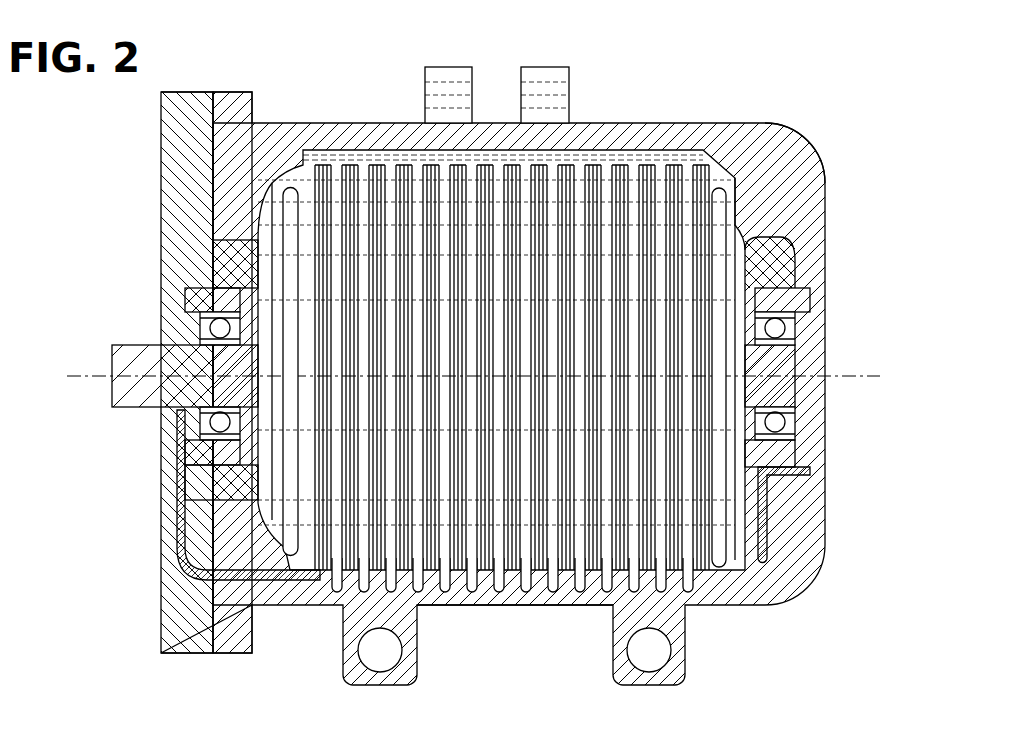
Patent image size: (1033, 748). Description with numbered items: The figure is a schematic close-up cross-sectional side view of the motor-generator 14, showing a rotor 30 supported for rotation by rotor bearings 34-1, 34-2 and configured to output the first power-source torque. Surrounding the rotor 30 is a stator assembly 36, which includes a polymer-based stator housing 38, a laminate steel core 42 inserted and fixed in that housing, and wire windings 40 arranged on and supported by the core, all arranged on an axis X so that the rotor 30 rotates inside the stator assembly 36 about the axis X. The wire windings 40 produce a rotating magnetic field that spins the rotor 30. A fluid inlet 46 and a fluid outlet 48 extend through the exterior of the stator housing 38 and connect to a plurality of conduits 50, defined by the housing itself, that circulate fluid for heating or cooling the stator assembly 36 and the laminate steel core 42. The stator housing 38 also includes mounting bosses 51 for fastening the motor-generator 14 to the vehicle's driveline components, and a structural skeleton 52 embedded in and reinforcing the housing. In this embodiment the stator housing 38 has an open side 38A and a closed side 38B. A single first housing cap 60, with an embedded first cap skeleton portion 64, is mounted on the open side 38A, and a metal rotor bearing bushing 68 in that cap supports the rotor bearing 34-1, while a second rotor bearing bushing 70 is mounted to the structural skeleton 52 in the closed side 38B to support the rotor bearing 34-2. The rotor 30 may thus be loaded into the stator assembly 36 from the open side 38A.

The motor-generator 14 is at (471, 351).
The rotor 30 is at (778, 360).
The rotor bearing 34-1 is at (215, 422).
The rotor bearing 34-2 is at (780, 424).
The stator assembly 36 is at (703, 607).
The stator housing 38 is at (558, 363).
The open side 38A is at (229, 240).
The closed side 38B is at (792, 242).
The wire windings 40 is at (755, 222).
The laminate steel core 42 is at (638, 163).
The fluid inlet 46 is at (569, 93).
The fluid outlet 48 is at (425, 93).
The conduits 50 is at (733, 544).
The mounting bosses 51 is at (404, 650).
The structural skeleton 52 is at (797, 479).
The first housing cap 60 is at (185, 93).
The first cap skeleton portion 64 is at (185, 578).
The rotor bearing bushing 68 is at (200, 312).
The rotor bearing bushing 70 is at (811, 301).
The axis X is at (856, 380).